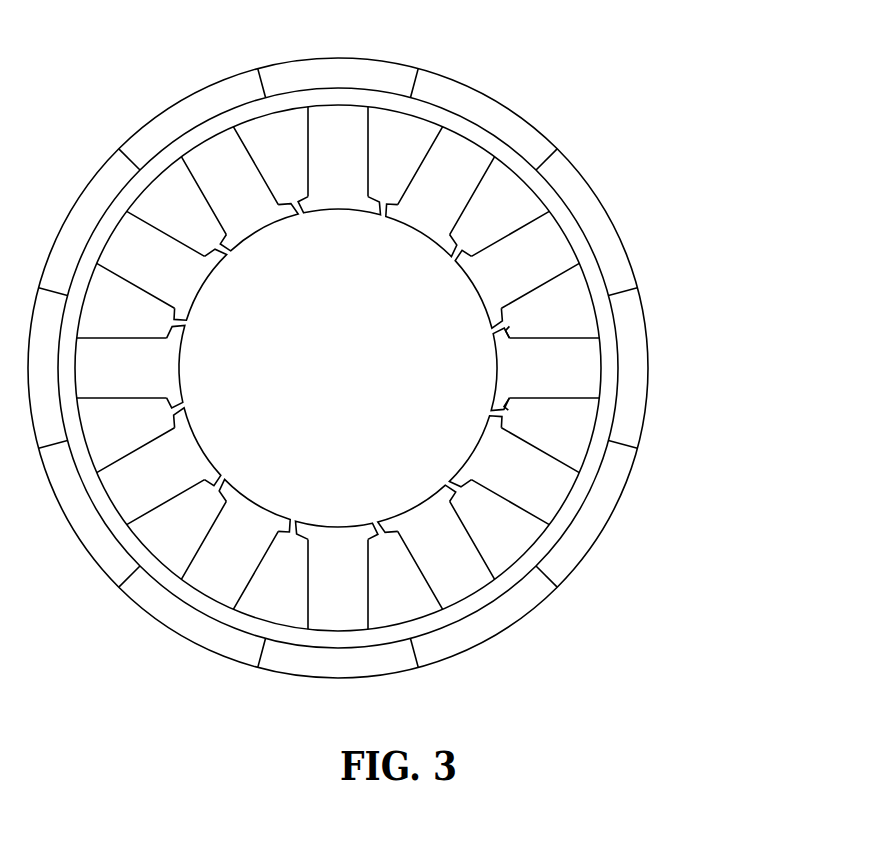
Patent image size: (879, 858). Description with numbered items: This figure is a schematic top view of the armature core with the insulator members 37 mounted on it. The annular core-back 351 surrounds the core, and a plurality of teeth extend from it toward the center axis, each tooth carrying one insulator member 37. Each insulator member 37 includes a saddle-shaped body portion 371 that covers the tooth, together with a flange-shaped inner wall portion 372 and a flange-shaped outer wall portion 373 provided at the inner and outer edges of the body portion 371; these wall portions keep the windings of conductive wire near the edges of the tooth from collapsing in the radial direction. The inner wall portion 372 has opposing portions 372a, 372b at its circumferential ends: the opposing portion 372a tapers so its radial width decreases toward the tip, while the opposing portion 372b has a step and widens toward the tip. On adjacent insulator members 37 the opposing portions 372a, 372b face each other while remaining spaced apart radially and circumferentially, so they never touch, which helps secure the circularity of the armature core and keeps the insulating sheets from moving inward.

The insulator member 37 is at (766, 171).
The core-back 351 is at (525, 130).
The body portion 371 is at (517, 247).
The inner wall portion 372 is at (505, 367).
The opposing portion 372a is at (508, 330).
The opposing portion 372b is at (505, 413).
The outer wall portion 373 is at (572, 240).